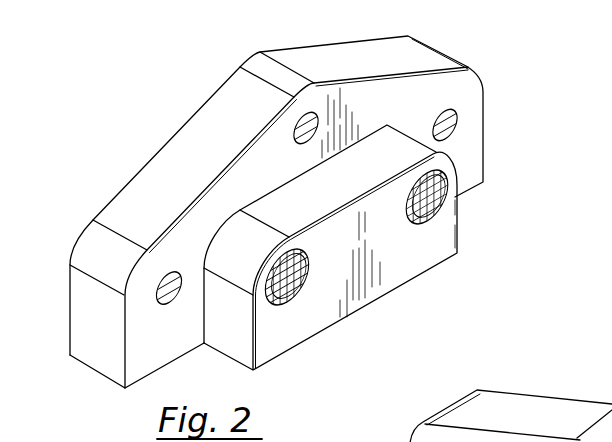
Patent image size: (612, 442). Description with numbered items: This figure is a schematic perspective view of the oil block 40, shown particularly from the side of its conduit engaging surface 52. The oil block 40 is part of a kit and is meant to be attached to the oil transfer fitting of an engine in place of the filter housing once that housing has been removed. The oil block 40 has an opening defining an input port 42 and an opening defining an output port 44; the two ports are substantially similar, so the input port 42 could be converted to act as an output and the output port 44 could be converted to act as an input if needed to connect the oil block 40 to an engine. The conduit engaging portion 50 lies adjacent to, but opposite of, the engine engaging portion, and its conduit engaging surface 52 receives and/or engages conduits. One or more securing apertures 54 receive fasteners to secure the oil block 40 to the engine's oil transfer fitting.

The oil block 40 is at (339, 224).
The conduit engaging portion 50 is at (463, 155).
The conduit engaging surface 52 is at (393, 263).
The input port 42 is at (427, 200).
The output port 44 is at (287, 288).
The securing aperture 54 is at (307, 125).